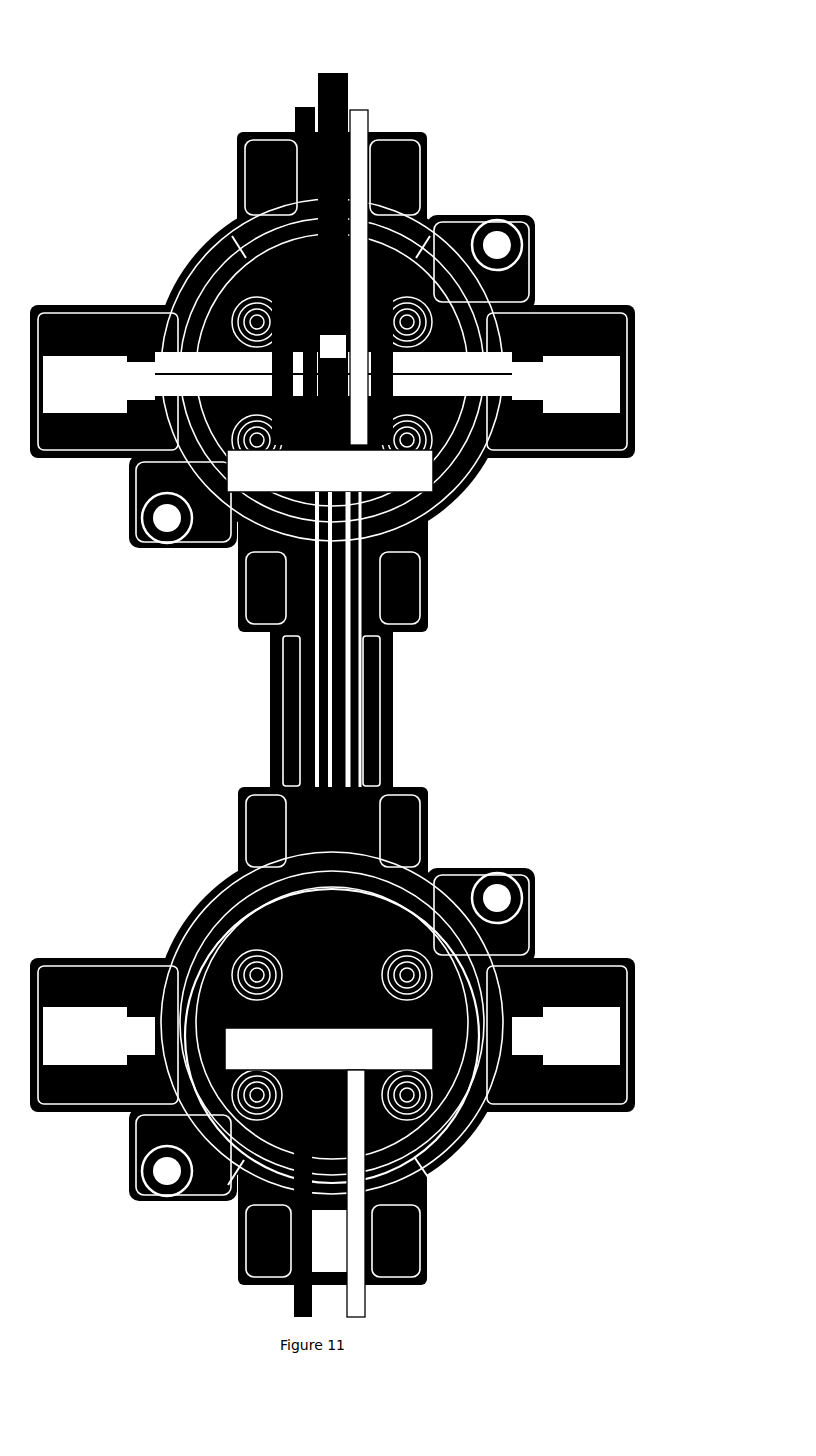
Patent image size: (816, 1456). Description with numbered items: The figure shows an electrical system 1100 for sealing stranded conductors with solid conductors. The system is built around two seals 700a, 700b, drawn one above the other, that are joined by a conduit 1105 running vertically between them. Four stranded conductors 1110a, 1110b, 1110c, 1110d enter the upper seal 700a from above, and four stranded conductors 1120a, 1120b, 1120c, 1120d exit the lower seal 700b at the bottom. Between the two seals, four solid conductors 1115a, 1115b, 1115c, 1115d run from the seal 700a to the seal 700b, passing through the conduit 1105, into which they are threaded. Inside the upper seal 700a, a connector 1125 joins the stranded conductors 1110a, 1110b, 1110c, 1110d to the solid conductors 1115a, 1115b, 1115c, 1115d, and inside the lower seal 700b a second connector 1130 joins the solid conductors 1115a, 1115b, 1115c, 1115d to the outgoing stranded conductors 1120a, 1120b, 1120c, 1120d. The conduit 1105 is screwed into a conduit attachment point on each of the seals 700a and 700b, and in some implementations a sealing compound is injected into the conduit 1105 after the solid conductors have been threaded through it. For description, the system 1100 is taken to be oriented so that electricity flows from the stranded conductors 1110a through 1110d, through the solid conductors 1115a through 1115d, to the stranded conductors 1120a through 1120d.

The electrical system 1100 is at (358, 27).
The seal 700a is at (190, 260).
The seal 700b is at (188, 910).
The conduit 1105 is at (270, 718).
The stranded conductor 1110a is at (232, 236).
The stranded conductor 1110b is at (295, 117).
The stranded conductor 1110c is at (368, 117).
The stranded conductor 1110d is at (447, 220).
The solid conductor 1115a is at (317, 768).
The solid conductor 1115b is at (330, 727).
The solid conductor 1115c is at (345, 687).
The solid conductor 1115d is at (395, 652).
The stranded conductor 1120a is at (228, 1185).
The stranded conductor 1120b is at (294, 1293).
The stranded conductor 1120c is at (365, 1293).
The stranded conductor 1120d is at (430, 1180).
The connector 1125 is at (440, 493).
The connector 1130 is at (490, 1145).